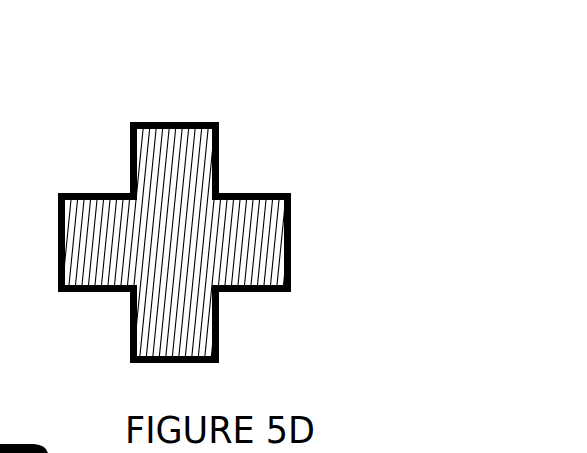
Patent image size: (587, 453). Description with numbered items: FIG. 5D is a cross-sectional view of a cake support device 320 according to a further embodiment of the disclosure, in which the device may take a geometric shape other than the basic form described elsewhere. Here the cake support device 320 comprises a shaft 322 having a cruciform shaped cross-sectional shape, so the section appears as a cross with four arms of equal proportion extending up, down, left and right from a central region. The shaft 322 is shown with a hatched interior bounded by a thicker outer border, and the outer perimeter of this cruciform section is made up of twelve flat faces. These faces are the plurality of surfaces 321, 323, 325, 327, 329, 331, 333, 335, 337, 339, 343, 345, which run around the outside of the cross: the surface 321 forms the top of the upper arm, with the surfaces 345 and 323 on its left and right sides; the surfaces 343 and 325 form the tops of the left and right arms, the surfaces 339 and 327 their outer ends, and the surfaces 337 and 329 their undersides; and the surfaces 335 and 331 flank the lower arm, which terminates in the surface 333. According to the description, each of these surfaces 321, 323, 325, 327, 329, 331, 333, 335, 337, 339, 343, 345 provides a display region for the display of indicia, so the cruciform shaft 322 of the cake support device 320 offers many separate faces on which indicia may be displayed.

The cake support device 320 is at (238, 133).
The surface 321 is at (154, 121).
The shaft 322 is at (279, 268).
The surface 323 is at (221, 160).
The surface 325 is at (276, 193).
The surface 327 is at (292, 232).
The surface 329 is at (261, 293).
The surface 331 is at (219, 340).
The surface 333 is at (172, 363).
The surface 335 is at (130, 336).
The surface 337 is at (75, 291).
The surface 339 is at (58, 262).
The surface 343 is at (85, 193).
The surface 345 is at (128, 160).